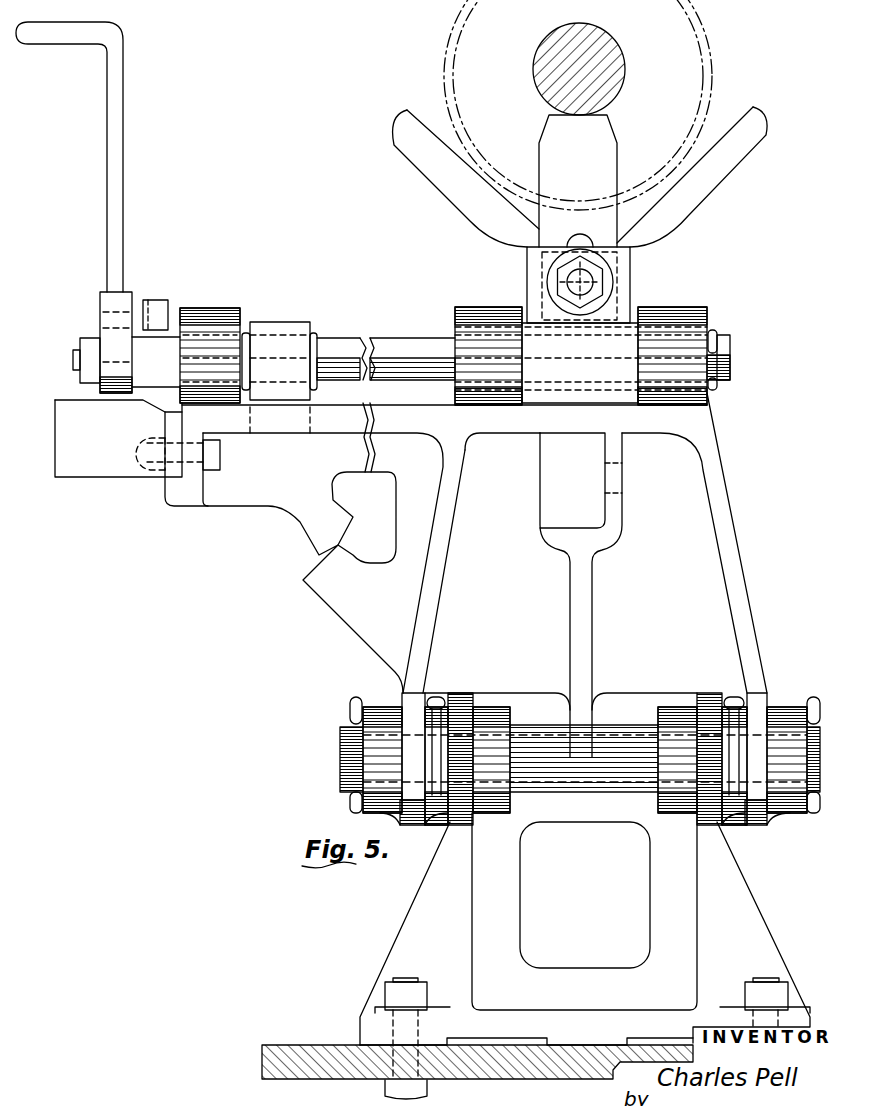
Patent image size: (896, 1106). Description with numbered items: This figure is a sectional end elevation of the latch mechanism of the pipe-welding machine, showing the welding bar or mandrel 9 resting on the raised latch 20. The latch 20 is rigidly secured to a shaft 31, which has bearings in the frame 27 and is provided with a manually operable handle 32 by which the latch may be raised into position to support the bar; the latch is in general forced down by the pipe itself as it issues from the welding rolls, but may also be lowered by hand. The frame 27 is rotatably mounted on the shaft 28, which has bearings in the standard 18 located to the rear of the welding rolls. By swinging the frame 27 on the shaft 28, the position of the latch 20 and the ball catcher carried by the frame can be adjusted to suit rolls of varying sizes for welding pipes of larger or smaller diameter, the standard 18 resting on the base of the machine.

The welding bar or mandrel 9 is at (620, 60).
The standard 18 is at (402, 923).
The latch 20 is at (618, 163).
The frame 27 is at (742, 546).
The shaft 28 is at (615, 720).
The shaft 31 is at (386, 342).
The handle 32 is at (124, 189).